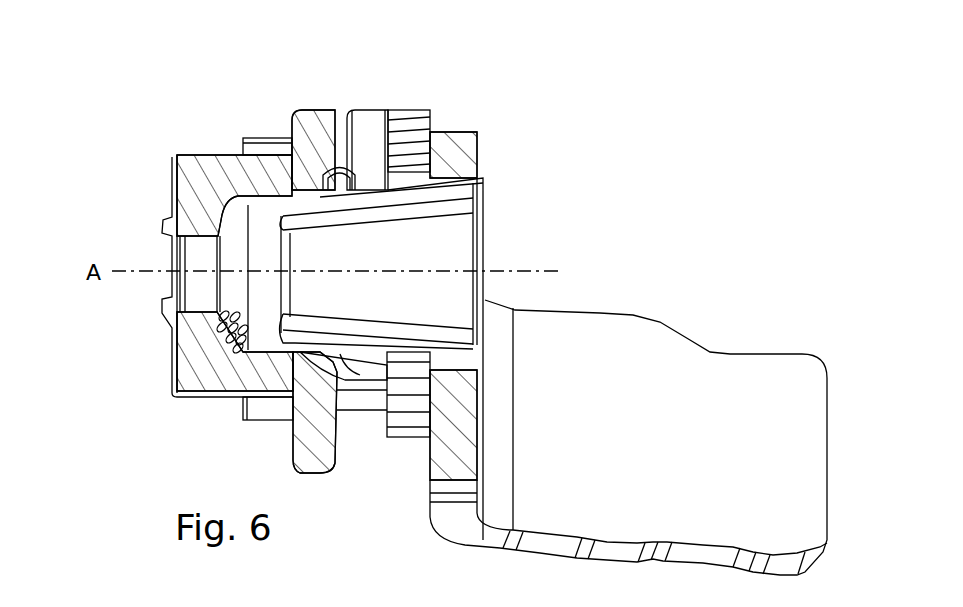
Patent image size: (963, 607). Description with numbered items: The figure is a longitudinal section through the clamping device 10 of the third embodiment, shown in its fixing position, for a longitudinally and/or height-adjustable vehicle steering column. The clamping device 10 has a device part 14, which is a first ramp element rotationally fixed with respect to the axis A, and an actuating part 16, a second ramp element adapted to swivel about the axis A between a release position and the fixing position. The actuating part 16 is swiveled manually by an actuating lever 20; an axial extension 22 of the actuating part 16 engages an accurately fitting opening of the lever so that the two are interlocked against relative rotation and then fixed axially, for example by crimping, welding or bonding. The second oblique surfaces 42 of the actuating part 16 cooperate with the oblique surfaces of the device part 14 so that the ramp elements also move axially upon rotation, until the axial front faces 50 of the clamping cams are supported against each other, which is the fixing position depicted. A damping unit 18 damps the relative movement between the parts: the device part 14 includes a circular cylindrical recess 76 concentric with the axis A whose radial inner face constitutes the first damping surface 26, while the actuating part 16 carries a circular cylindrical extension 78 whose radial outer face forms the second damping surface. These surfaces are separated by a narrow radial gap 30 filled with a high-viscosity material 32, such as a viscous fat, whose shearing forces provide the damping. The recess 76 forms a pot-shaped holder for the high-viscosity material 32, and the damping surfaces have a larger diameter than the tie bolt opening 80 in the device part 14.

The clamping device 10 is at (461, 293).
The device part 14 is at (188, 359).
The actuating part 16 is at (423, 343).
The damping unit 18 is at (241, 246).
The actuating lever 20 is at (687, 363).
The axial extension 22 is at (470, 188).
The first damping surface 26 is at (267, 343).
The gap 30 is at (293, 198).
The high-viscosity material 32 is at (223, 330).
The second oblique surfaces 42 is at (365, 123).
The axial front faces 50 is at (335, 140).
The circular cylindrical recess 76 is at (243, 222).
The circular cylindrical extension 78 is at (317, 212).
The tie bolt opening 80 is at (193, 253).